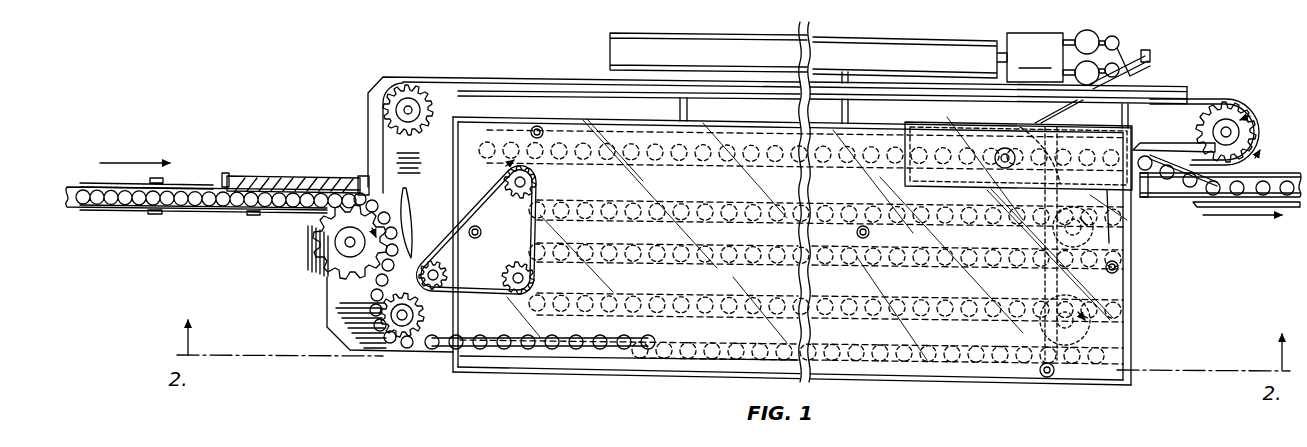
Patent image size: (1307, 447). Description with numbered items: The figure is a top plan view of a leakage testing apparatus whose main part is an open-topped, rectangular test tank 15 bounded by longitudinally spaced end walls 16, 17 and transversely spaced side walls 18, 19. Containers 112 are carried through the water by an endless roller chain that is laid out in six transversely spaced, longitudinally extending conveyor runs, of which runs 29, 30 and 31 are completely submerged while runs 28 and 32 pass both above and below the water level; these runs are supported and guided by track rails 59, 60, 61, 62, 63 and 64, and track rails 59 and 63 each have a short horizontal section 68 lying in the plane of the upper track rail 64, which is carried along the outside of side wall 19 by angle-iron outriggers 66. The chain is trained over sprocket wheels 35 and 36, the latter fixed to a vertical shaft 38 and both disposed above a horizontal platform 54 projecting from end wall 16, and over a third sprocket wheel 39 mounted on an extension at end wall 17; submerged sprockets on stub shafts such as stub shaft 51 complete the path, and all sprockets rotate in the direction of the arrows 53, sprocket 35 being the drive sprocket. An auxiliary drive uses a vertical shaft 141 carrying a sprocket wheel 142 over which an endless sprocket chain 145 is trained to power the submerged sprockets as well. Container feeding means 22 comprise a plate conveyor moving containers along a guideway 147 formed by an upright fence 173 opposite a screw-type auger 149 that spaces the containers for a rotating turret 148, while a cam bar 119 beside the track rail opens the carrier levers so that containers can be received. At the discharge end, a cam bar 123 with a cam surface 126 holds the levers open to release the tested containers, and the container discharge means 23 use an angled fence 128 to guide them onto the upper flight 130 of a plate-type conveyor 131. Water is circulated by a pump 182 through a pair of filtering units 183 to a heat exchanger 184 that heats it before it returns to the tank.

The test tank 15 is at (537, 380).
The end wall 16 is at (451, 330).
The end wall 17 is at (1133, 307).
The side wall 18 is at (672, 374).
The side wall 19 is at (563, 113).
The container feeding means 22 is at (298, 216).
The container discharge means 23 is at (1253, 163).
The conveyor run 28 is at (728, 358).
The conveyor run 29 is at (708, 313).
The conveyor run 30 is at (687, 258).
The conveyor run 31 is at (738, 213).
The conveyor run 32 is at (773, 162).
The sprocket wheel 35 is at (397, 334).
The sprocket wheel 36 is at (390, 122).
The vertical shaft 38 is at (413, 100).
The sprocket wheel 39 is at (1233, 106).
The stub shaft 51 is at (1072, 262).
The arrows 53 is at (1250, 116).
The platform 54 is at (337, 307).
The track rail 59 is at (876, 368).
The track rail 60 is at (931, 311).
The track rail 61 is at (851, 267).
The track rail 62 is at (695, 196).
The track rail 63 is at (652, 169).
The track rail 64 is at (508, 77).
The outriggers 66 is at (688, 110).
The horizontal section 68 is at (1142, 145).
The container 112 is at (597, 354).
The cam bar 119 is at (412, 201).
The cam bar 123 is at (1172, 147).
The cam surface 126 is at (1260, 140).
The fence 128 is at (1186, 183).
The upper flight 130 is at (1192, 201).
The plate-type conveyor 131 is at (1153, 200).
The vertical shaft 141 is at (431, 264).
The sprocket wheel 142 is at (452, 267).
The sprocket chain 145 is at (473, 294).
The guideway 147 is at (282, 209).
The turret 148 is at (309, 286).
The auger 149 is at (291, 181).
The fence 173 is at (218, 208).
The pump 182 is at (1035, 57).
The filtering units 183 is at (1122, 55).
The heat exchanger 184 is at (628, 50).